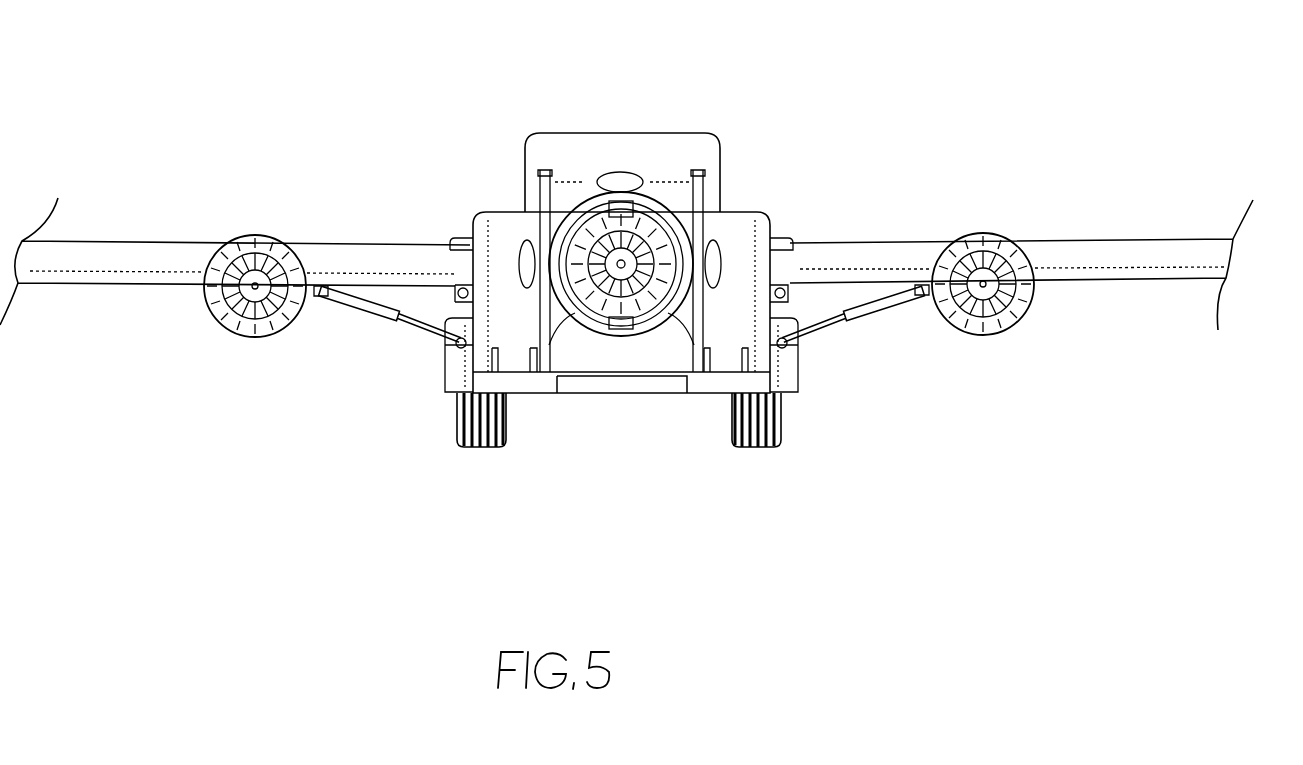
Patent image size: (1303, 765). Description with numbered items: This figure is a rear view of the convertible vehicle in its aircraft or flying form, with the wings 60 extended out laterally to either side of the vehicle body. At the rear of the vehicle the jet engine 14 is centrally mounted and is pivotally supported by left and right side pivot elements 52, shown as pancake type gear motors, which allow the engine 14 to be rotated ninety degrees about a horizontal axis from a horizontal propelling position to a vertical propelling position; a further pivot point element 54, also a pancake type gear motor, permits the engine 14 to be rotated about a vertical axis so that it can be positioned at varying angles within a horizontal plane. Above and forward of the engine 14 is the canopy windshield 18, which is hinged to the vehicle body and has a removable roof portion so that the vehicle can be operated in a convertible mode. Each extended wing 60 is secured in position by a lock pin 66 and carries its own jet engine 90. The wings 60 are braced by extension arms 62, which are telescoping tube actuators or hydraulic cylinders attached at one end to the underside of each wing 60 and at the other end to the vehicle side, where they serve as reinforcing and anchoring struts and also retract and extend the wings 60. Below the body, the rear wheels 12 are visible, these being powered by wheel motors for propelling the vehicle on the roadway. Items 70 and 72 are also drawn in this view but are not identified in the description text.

The rear wheels 12 is at (497, 448).
The jet engine 14 is at (656, 210).
The canopy windshield 18 is at (580, 133).
The pivot element 52 is at (506, 245).
The pivot point element 54 is at (622, 172).
The wings 60 is at (115, 242).
The extension arms 62 is at (382, 320).
The lock pin 66 is at (465, 235).
The strut wing mounts 70 is at (320, 298).
The landing skid brackets 72 is at (445, 392).
The jet engine 90 is at (258, 236).